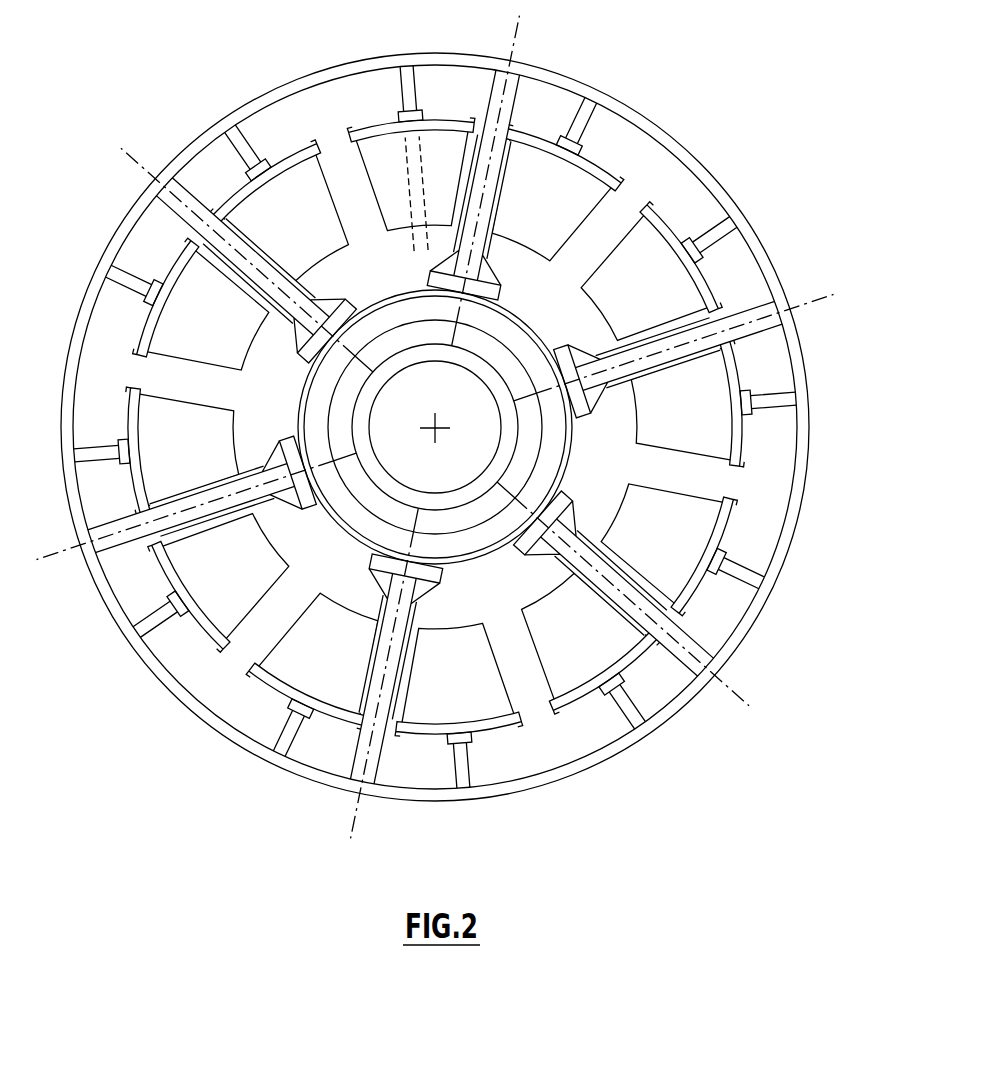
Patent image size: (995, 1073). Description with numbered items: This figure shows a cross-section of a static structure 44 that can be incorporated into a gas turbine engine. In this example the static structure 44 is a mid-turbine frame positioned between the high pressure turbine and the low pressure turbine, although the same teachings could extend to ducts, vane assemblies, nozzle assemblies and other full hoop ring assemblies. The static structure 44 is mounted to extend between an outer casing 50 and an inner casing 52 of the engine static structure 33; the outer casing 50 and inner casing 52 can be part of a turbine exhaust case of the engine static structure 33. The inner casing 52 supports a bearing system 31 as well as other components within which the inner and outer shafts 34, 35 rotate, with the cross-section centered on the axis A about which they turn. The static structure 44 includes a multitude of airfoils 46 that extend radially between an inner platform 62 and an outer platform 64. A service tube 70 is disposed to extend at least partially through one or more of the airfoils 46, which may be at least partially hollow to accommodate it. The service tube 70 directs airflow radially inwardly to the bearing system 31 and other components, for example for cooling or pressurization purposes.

The engine static structure 33 is at (444, 426).
The bearing system 31 is at (460, 434).
The inner shaft 34 is at (507, 453).
The outer shaft 35 is at (528, 437).
The inner casing 52 is at (487, 572).
The rotation axis A is at (437, 432).
The airfoils 46 is at (445, 429).
The static structure 44 is at (730, 540).
The outer casing 50 is at (808, 530).
The inner platform 62 is at (405, 238).
The outer platform 64 is at (441, 127).
The service tube 70 is at (430, 184).